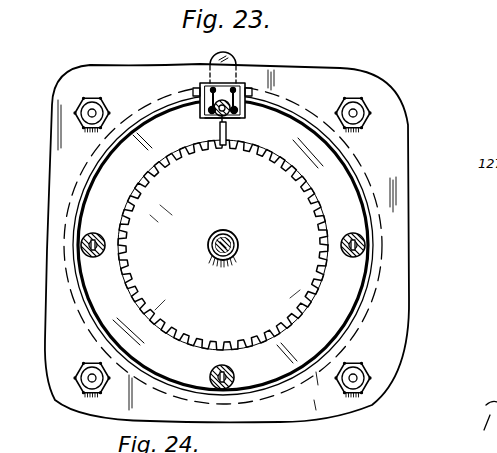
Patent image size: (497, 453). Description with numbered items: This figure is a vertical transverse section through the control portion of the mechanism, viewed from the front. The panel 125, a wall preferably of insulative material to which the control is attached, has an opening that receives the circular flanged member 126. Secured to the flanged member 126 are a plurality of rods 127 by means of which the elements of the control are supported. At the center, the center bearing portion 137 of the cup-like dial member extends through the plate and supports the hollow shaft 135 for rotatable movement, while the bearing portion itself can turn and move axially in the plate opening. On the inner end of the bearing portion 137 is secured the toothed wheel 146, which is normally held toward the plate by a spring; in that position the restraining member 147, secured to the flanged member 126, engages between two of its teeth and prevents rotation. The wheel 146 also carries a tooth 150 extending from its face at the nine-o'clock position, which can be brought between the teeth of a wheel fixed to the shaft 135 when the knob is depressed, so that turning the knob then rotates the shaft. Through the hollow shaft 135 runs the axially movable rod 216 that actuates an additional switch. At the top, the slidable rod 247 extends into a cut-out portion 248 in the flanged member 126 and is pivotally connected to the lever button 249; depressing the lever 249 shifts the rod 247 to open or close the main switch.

The panel 125 is at (124, 67).
The flanged member 126 is at (328, 167).
The rods 127 is at (94, 233).
The shaft 135 is at (221, 248).
The center bearing portion 137 is at (224, 231).
The toothed wheel 146 is at (291, 199).
The restraining member 147 is at (226, 131).
The tooth 150 is at (122, 242).
The rod 216 is at (209, 246).
The rod 247 is at (208, 118).
The cut-out portion 248 is at (248, 108).
The lever button 249 is at (238, 58).